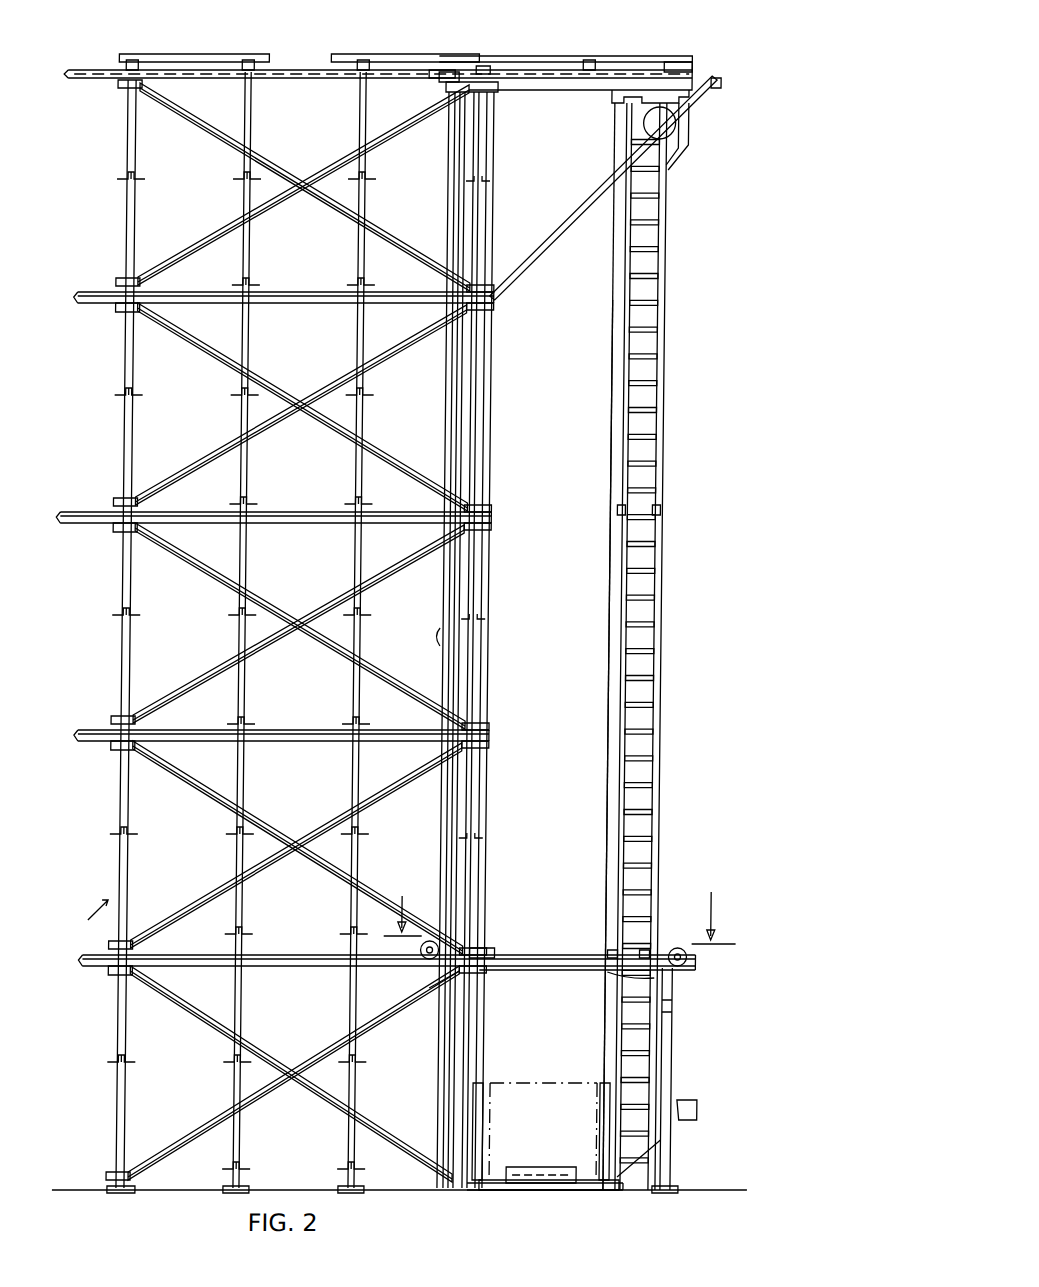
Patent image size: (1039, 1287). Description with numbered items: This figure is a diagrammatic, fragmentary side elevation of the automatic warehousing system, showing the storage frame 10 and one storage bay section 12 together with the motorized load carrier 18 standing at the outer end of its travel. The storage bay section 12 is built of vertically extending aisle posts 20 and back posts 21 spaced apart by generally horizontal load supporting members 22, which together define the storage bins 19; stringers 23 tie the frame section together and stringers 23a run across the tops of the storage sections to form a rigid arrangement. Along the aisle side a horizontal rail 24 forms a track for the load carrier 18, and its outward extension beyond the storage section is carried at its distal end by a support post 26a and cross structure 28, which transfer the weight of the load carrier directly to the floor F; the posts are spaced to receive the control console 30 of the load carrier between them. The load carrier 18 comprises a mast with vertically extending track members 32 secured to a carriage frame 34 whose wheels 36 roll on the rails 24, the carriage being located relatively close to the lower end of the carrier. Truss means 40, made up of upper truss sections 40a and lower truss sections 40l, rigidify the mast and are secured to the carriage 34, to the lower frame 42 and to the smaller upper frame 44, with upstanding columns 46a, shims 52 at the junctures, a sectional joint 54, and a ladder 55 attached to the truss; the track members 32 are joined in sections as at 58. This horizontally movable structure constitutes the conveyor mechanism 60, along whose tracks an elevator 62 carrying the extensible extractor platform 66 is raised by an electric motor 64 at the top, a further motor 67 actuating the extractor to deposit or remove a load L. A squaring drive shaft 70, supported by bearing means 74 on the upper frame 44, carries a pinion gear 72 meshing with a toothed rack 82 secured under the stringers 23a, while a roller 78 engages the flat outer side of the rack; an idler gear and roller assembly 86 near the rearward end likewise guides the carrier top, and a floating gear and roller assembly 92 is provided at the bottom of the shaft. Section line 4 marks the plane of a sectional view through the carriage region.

The storage frame 10 is at (77, 919).
The storage bay section 12 is at (126, 1082).
The load carrier 18 is at (610, 608).
The storage bins 19 is at (298, 105).
The aisle posts 20 is at (274, 516).
The back posts 21 is at (126, 1128).
The load supporting members 22 is at (236, 176).
The stringers 23 is at (415, 250).
The stringers 23a is at (186, 62).
The rails 24 is at (295, 955).
The support posts 26a is at (684, 1046).
The cross structure 28 is at (684, 1006).
The control console 30 is at (700, 1100).
The track members 32 is at (498, 448).
The carriage frame 34 is at (505, 952).
The wheels 36 is at (432, 960).
The truss means 40 is at (455, 622).
The upper truss sections 40a is at (475, 665).
The lower mast tube 40l is at (620, 1030).
The lower frame 42 is at (600, 1194).
The upper frame 44 is at (625, 90).
The upstanding columns 46a is at (462, 250).
The shims 52 is at (614, 950).
The sectional joint 54 is at (480, 506).
The ladder 55 is at (645, 274).
The track member joints 58 is at (486, 920).
The conveyor mechanism 60 is at (620, 648).
The elevator 62 is at (580, 1192).
The electric motor 64 is at (672, 118).
The extractor platform 66 is at (548, 1170).
The electric motor 67 is at (628, 1195).
The drive shaft 70 is at (452, 640).
The pinion gear 72 is at (445, 68).
The bearing means 74 is at (445, 90).
The roller 78 is at (480, 64).
The toothed rack 82 is at (380, 68).
The idler guiding gear and roller assembly 86 is at (700, 72).
The gear and roller assembly 92 is at (444, 996).
The section line 4 is at (559, 932).
The load L is at (582, 1082).
The floor F is at (725, 1200).